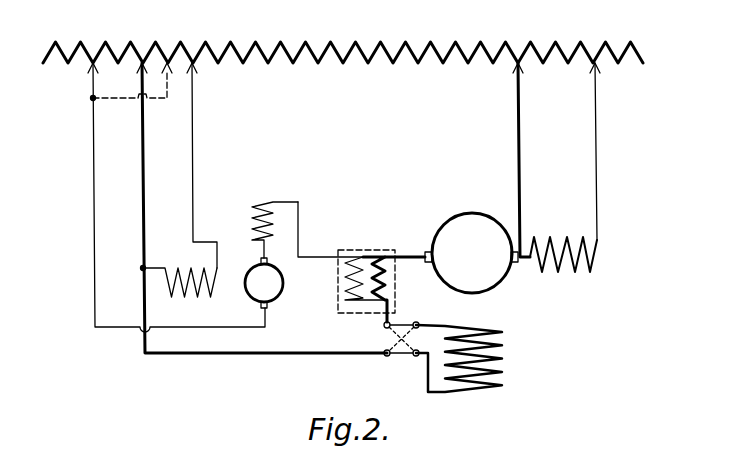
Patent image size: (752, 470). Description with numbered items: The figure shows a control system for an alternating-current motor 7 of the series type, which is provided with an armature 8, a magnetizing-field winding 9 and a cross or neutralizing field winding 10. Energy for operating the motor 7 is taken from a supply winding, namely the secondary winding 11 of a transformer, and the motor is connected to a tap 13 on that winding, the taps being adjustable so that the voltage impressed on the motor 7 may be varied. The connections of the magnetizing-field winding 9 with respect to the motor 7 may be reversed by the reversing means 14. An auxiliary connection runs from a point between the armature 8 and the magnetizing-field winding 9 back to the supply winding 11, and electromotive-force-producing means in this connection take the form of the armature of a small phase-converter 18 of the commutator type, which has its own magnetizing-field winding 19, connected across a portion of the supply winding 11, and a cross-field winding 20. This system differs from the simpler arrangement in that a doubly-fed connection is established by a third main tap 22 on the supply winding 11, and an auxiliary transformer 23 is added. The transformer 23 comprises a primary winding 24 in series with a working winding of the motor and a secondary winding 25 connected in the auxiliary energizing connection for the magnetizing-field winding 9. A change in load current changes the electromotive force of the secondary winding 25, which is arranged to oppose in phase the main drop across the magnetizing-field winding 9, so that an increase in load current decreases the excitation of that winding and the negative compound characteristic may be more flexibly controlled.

The secondary winding 11 is at (383, 43).
The third main tap 22 is at (520, 110).
The tap 13 is at (597, 110).
The magnetizing-field winding 19 is at (192, 293).
The cross-field winding 20 is at (252, 220).
The phase-converter 18 is at (245, 263).
The auxiliary transformer 23 is at (366, 268).
The secondary winding 25 is at (348, 292).
The primary winding 24 is at (390, 292).
The alternating-current motor 7 is at (473, 249).
The armature 8 is at (473, 230).
The cross or neutralizing field winding 10 is at (587, 263).
The reversing means 14 is at (401, 357).
The magnetizing-field winding 9 is at (500, 372).